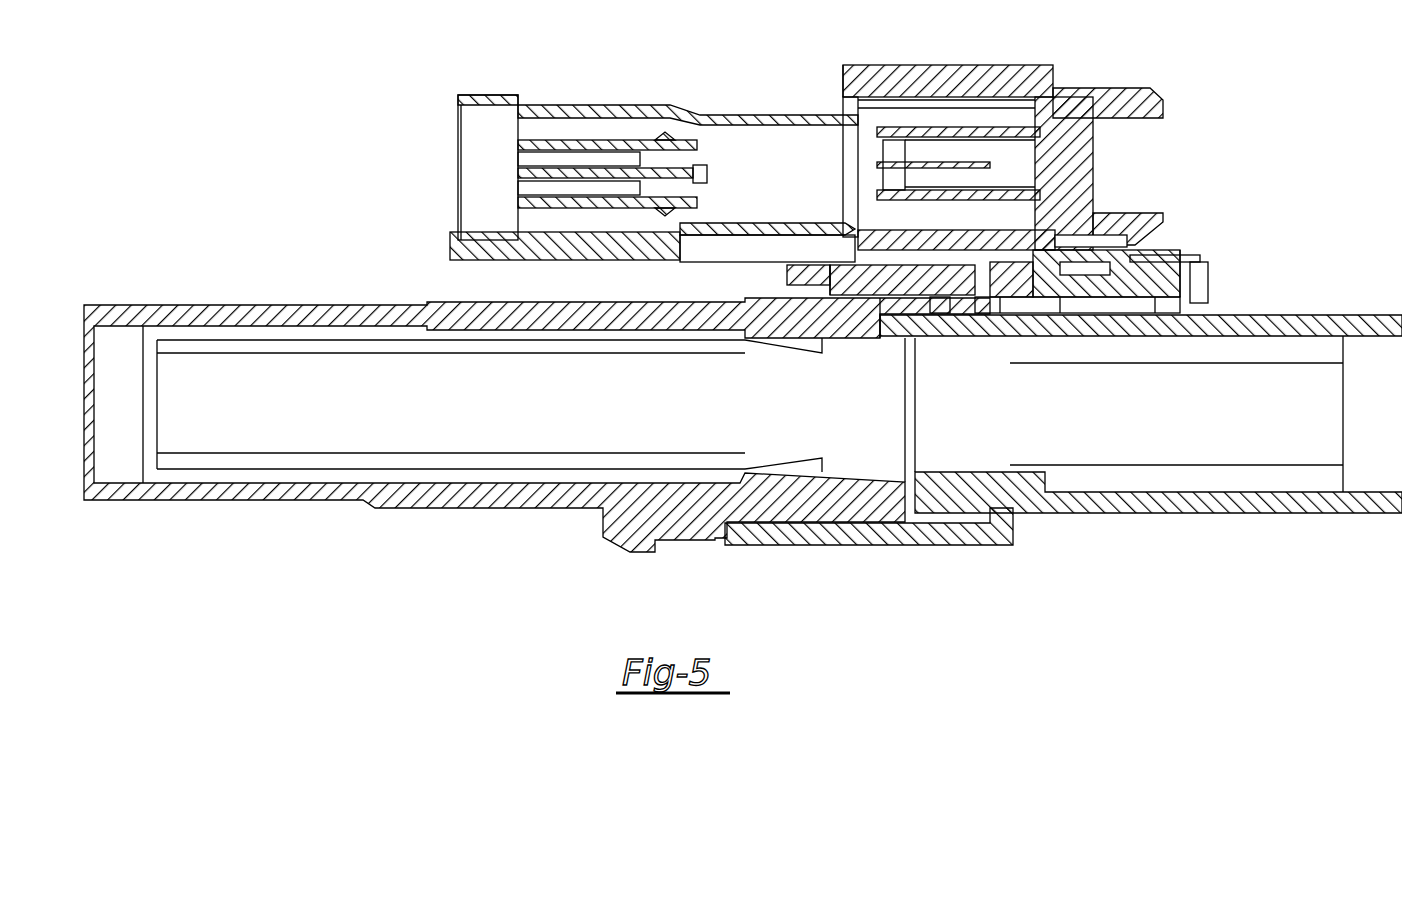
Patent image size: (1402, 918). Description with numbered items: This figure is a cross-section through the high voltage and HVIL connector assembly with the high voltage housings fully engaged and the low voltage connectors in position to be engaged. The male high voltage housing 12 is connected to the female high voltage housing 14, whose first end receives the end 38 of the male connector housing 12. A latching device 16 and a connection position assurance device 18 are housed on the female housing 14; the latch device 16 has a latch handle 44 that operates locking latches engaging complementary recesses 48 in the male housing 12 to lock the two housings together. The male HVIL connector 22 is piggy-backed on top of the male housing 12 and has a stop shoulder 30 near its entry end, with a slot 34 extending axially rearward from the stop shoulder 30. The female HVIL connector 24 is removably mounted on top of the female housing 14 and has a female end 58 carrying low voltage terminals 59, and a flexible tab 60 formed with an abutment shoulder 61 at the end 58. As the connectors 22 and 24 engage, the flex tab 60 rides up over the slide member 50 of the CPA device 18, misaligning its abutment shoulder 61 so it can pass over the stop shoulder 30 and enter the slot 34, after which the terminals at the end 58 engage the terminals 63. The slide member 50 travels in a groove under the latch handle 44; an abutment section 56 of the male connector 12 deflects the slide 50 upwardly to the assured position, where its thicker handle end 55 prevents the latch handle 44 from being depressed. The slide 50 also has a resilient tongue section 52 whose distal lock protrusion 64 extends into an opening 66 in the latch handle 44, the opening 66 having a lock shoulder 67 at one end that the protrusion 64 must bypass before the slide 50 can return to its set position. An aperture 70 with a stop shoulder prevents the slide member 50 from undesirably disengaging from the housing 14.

The male high voltage housing 12 is at (428, 507).
The female high voltage housing 14 is at (1330, 315).
The latching device 16 is at (1160, 238).
The connection position assurance device 18 is at (1198, 262).
The male HVIL connector 22 is at (630, 104).
The female HVIL connector 24 is at (1010, 68).
The stop shoulder 30 is at (830, 292).
The slot 34 is at (800, 240).
The end of the male connector housing 38 is at (905, 478).
The latch handle 44 is at (1165, 258).
The recess 48 is at (785, 270).
The slide member 50 is at (1208, 278).
The resilient tongue section 52 is at (1060, 300).
The thicker handle end 55 is at (1155, 300).
The abutment section 56 is at (975, 300).
The female end 58 is at (843, 80).
The low voltage terminals 59 is at (880, 150).
The flexible tab 60 is at (905, 235).
The abutment shoulder 61 is at (850, 250).
The terminals 63 is at (690, 195).
The lock protrusion 64 is at (1000, 300).
The opening 66 is at (1085, 258).
The lock shoulder 67 is at (1010, 250).
The aperture 70 is at (790, 258).